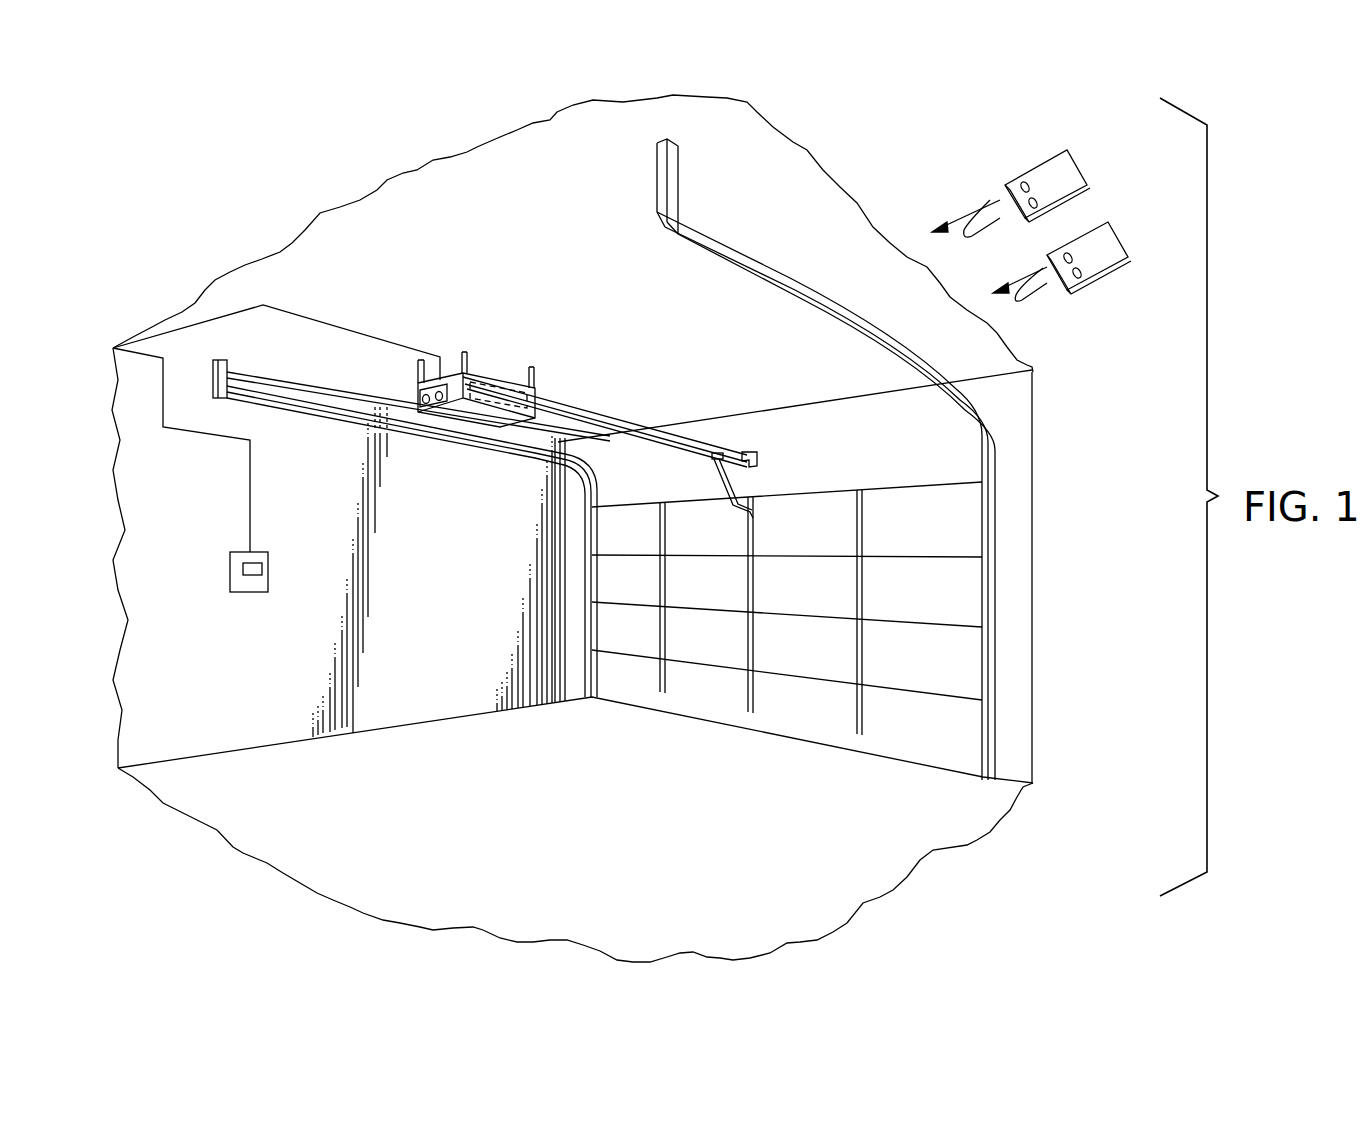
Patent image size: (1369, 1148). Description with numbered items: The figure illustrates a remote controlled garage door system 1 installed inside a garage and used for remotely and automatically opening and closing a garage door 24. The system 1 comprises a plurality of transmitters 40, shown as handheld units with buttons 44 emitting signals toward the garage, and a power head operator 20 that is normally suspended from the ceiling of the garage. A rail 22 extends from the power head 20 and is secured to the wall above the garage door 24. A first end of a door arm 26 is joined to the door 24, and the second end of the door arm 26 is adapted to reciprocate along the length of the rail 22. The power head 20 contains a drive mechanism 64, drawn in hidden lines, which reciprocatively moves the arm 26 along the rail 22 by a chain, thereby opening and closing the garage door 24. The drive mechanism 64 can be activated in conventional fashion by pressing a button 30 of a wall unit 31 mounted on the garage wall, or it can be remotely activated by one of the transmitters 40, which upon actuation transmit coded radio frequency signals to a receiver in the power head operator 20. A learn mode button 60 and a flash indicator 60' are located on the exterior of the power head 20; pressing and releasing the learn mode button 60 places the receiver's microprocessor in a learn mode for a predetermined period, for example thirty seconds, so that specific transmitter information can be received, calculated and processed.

The remote controlled garage door system 1 is at (477, 628).
The power head operator 20 is at (478, 416).
The rail 22 is at (580, 408).
The garage door 24 is at (793, 722).
The door arm 26 is at (717, 478).
The button 30 is at (261, 570).
The wall unit 31 is at (232, 585).
The transmitters 40 is at (1038, 158).
The transmitter push buttons 44 is at (1007, 187).
The learn mode button 60 is at (386, 382).
The flash indicator 60' is at (411, 376).
The drive mechanism 64 is at (514, 388).